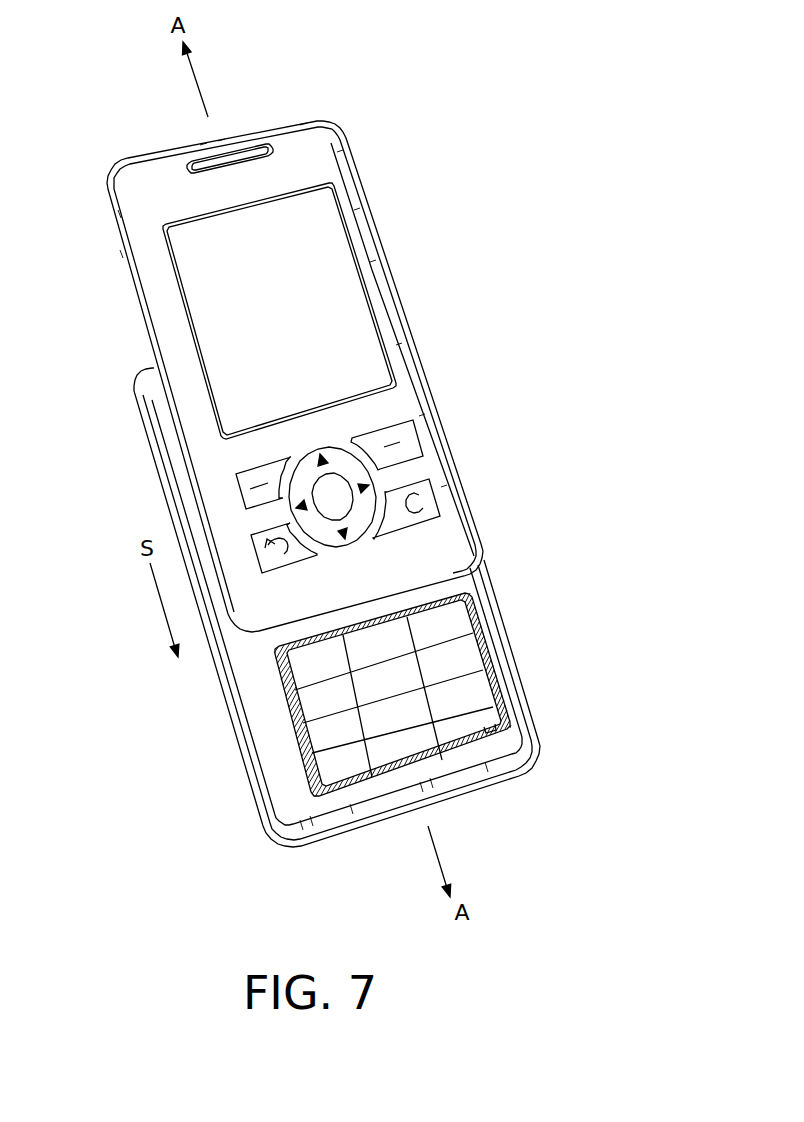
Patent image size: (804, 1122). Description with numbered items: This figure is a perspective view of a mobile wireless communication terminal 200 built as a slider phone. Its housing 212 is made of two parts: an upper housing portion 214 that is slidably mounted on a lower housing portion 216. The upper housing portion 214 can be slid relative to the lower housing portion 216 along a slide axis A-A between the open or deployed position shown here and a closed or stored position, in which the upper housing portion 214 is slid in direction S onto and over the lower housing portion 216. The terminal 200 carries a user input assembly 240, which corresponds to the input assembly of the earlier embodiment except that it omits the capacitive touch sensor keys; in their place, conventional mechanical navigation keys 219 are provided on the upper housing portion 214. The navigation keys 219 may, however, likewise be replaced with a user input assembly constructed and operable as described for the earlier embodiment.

The mobile wireless communication terminal 200 is at (320, 442).
The housing 212 is at (418, 309).
The upper housing portion 214 is at (157, 165).
The lower housing portion 216 is at (267, 808).
The navigation keys 219 is at (424, 449).
The user input assembly 240 is at (523, 614).